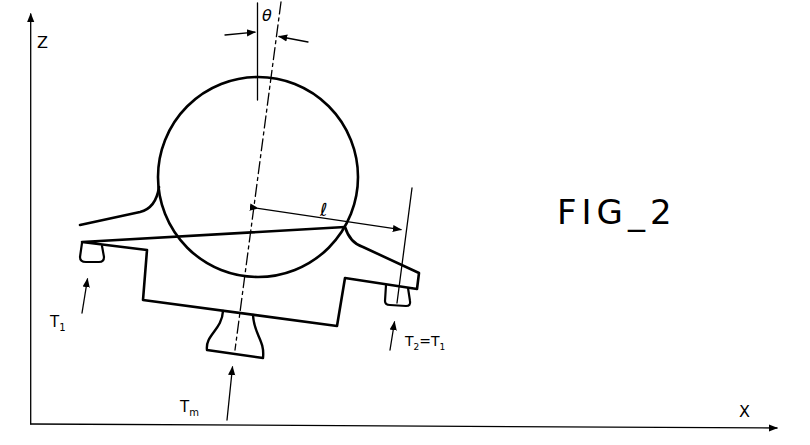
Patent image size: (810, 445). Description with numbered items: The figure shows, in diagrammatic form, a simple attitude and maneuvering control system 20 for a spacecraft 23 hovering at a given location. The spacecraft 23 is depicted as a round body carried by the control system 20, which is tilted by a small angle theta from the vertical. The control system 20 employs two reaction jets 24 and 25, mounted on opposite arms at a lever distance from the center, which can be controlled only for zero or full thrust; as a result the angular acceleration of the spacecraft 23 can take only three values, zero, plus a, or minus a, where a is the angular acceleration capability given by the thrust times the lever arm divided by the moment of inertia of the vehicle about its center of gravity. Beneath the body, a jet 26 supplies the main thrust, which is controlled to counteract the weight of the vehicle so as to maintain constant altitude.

The attitude and maneuvering control system 20 is at (312, 311).
The spacecraft 23 is at (342, 121).
The reaction jet 24 is at (80, 247).
The reaction jet 25 is at (411, 302).
The jet 26 is at (264, 359).